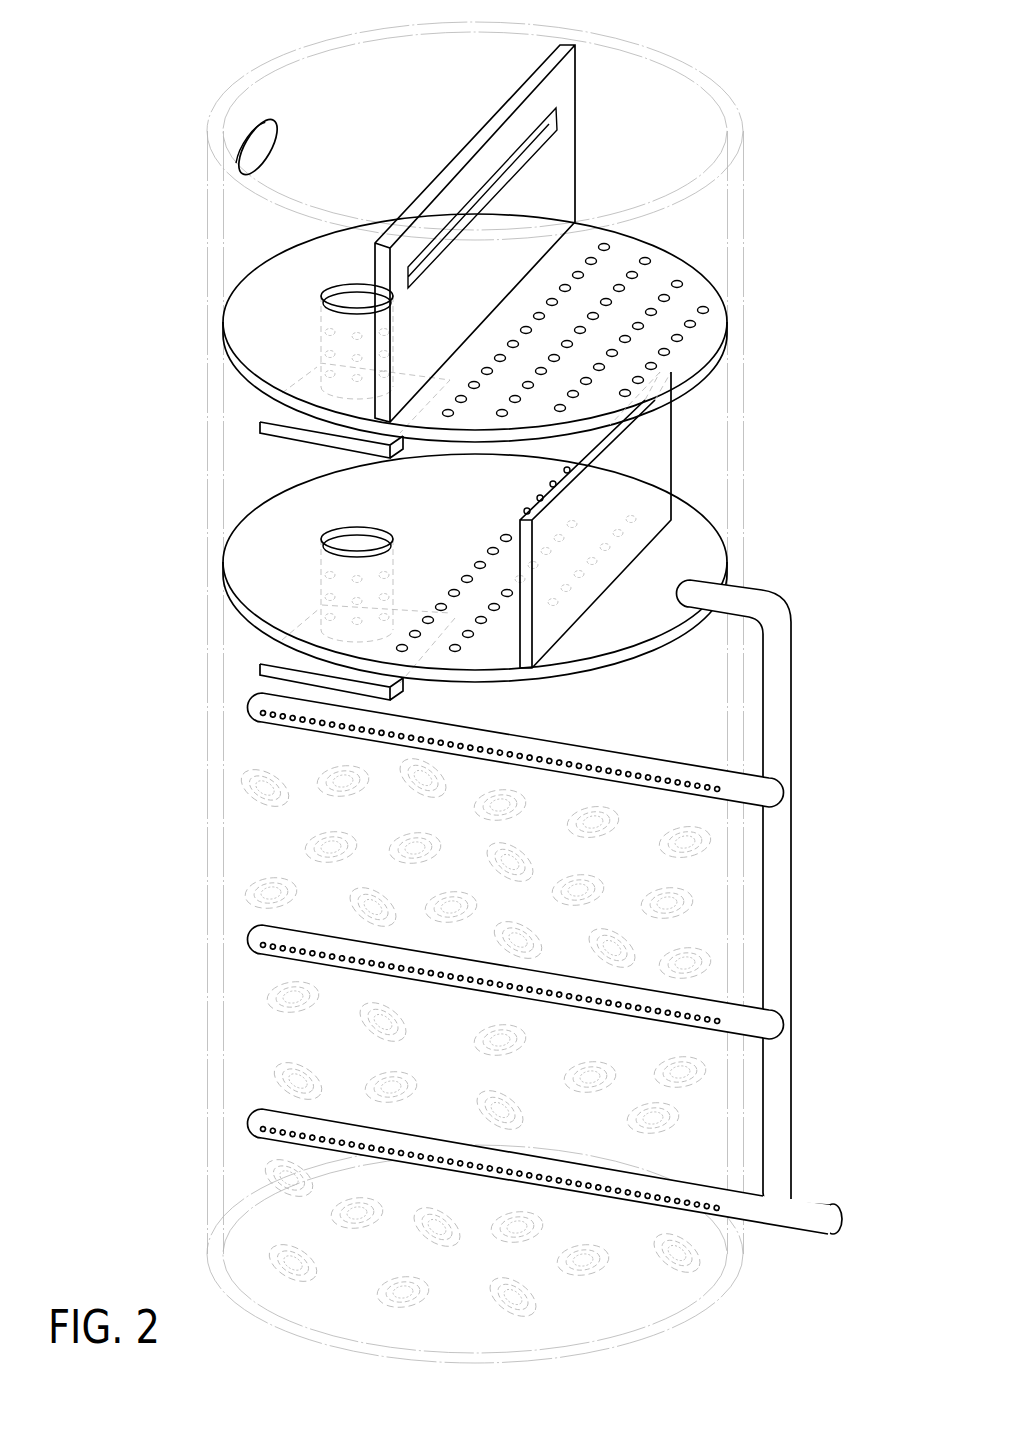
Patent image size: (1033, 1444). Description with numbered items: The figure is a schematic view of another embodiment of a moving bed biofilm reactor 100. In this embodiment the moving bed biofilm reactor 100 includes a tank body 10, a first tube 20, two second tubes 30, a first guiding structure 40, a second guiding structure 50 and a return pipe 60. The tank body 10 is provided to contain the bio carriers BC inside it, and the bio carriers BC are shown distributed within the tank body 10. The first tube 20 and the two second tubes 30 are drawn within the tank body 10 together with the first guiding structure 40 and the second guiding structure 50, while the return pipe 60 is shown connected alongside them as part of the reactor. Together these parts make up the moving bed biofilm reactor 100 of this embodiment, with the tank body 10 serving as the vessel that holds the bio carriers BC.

The moving bed biofilm reactor 100 is at (199, 38).
The tank body 10 is at (722, 80).
The second guiding structure 50 is at (260, 268).
The first guiding structure 40 is at (260, 506).
The second tube 30 is at (253, 696).
The first tube 20 is at (253, 1106).
The return pipe 60 is at (797, 743).
The bio carriers BC is at (258, 806).